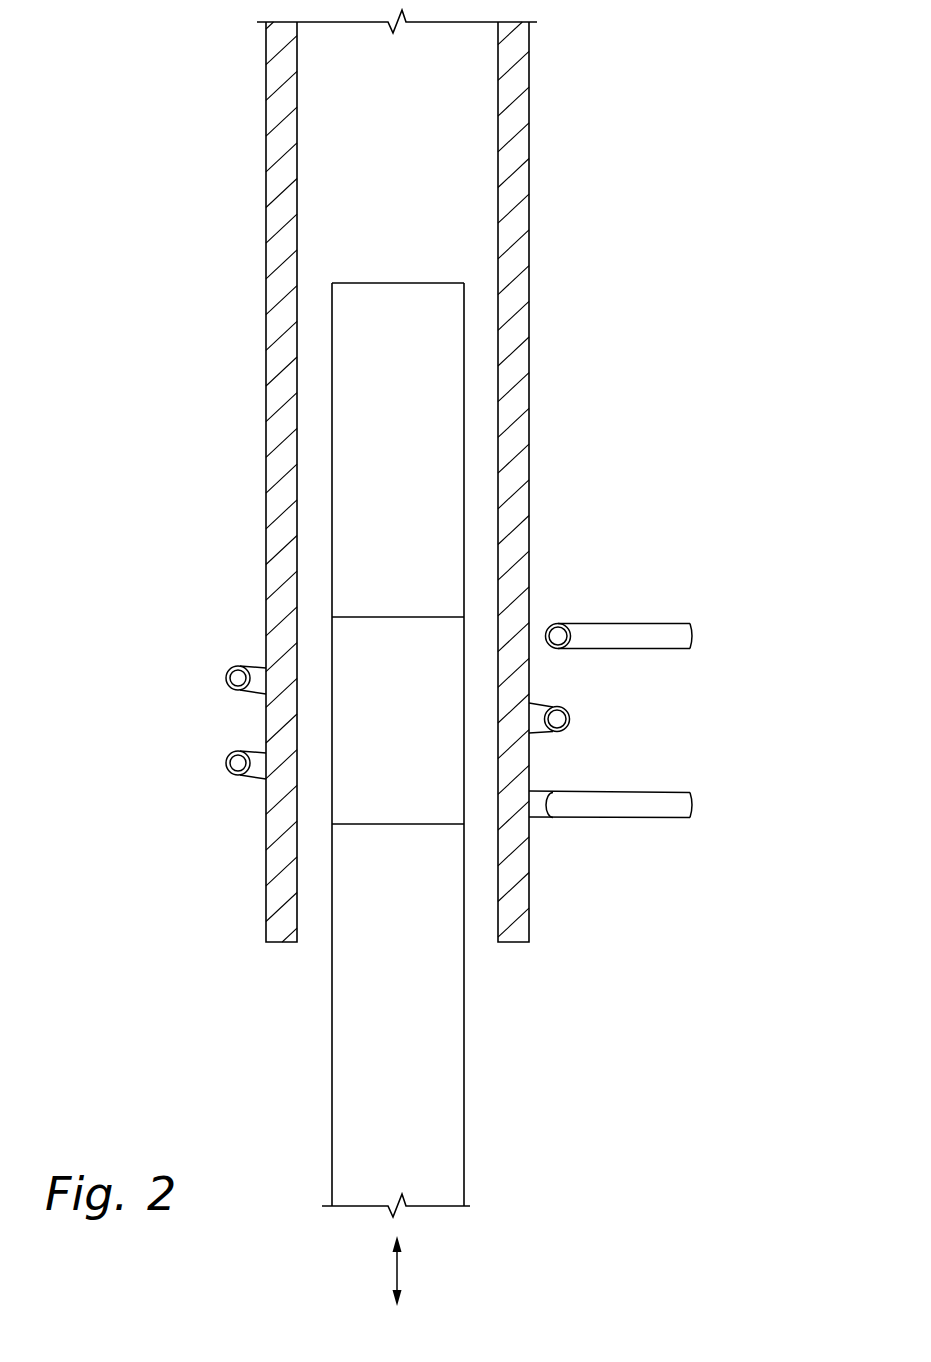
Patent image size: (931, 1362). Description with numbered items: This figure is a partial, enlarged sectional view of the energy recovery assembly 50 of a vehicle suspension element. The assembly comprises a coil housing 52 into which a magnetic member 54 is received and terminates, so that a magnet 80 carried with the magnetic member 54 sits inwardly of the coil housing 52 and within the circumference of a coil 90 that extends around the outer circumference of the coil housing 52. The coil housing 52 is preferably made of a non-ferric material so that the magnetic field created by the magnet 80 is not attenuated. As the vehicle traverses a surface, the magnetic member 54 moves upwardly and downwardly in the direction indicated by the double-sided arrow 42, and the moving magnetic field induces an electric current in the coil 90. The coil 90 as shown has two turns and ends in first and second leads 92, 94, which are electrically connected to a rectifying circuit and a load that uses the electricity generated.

The energy recovery assembly 50 is at (603, 305).
The coil housing 52 is at (530, 430).
The magnetic member 54 is at (425, 750).
The magnet 80 is at (410, 731).
The coil 90 is at (571, 720).
The first lead 92 is at (648, 622).
The second lead 94 is at (648, 820).
The direction of motion 42 is at (398, 1268).